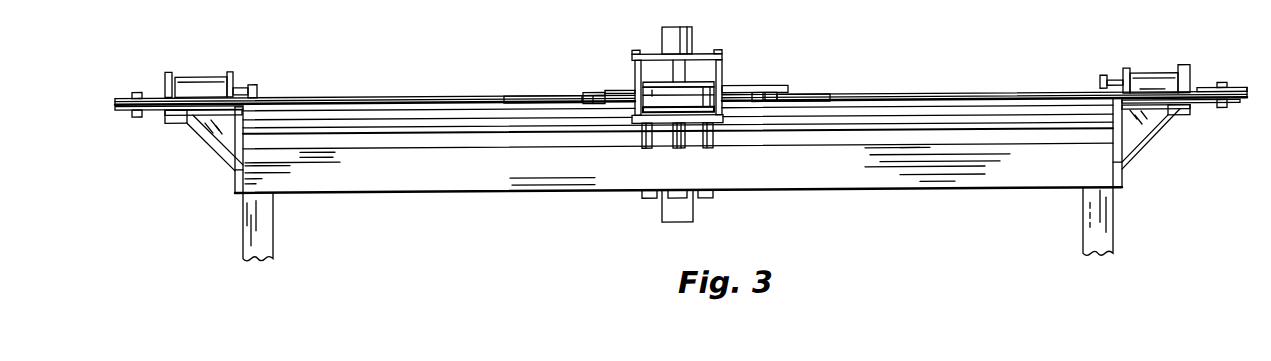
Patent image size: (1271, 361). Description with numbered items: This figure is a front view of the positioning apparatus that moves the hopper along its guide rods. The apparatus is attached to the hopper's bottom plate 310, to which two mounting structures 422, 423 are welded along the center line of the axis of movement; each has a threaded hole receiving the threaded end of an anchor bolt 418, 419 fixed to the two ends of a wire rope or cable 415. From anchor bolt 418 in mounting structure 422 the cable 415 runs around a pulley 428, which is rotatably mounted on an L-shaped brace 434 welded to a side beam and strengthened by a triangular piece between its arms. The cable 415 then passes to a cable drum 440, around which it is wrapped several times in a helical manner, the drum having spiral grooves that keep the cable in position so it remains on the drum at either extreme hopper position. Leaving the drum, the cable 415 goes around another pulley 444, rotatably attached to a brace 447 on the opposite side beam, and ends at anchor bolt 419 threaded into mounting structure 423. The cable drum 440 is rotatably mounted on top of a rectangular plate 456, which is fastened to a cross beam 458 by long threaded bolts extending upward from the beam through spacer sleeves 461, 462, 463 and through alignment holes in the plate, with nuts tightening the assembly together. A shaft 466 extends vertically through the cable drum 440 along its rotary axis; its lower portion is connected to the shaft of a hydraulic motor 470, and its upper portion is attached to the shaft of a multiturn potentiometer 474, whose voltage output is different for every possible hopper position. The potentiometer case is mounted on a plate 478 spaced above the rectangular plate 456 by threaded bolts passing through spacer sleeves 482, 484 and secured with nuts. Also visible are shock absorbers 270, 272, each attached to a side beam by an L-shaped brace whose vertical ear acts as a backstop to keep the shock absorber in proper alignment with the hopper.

The wire rope or cable 415 is at (343, 96).
The cross beam 458 is at (1013, 167).
The pulley 428 is at (125, 89).
The pulley 444 is at (1242, 91).
The L-shaped brace 434 is at (152, 104).
The brace 447 is at (1138, 128).
The shock absorber 272 is at (205, 84).
The shock absorber 270 is at (1152, 83).
The anchor bolt 418 is at (533, 96).
The mounting structure 422 is at (585, 101).
The spacer sleeve 482 is at (635, 70).
The bottom plate 310 is at (735, 89).
The plate 478 is at (655, 52).
The potentiometer 474 is at (673, 32).
The shaft 466 is at (682, 80).
The spacer sleeve 484 is at (690, 100).
The cable drum 440 is at (732, 92).
The mounting structure 423 is at (757, 96).
The anchor bolt 419 is at (808, 94).
The rectangular plate 456 is at (634, 118).
The spacer sleeve 461 is at (648, 140).
The spacer sleeve 462 is at (677, 140).
The spacer sleeve 463 is at (708, 140).
The hydraulic motor 470 is at (668, 207).